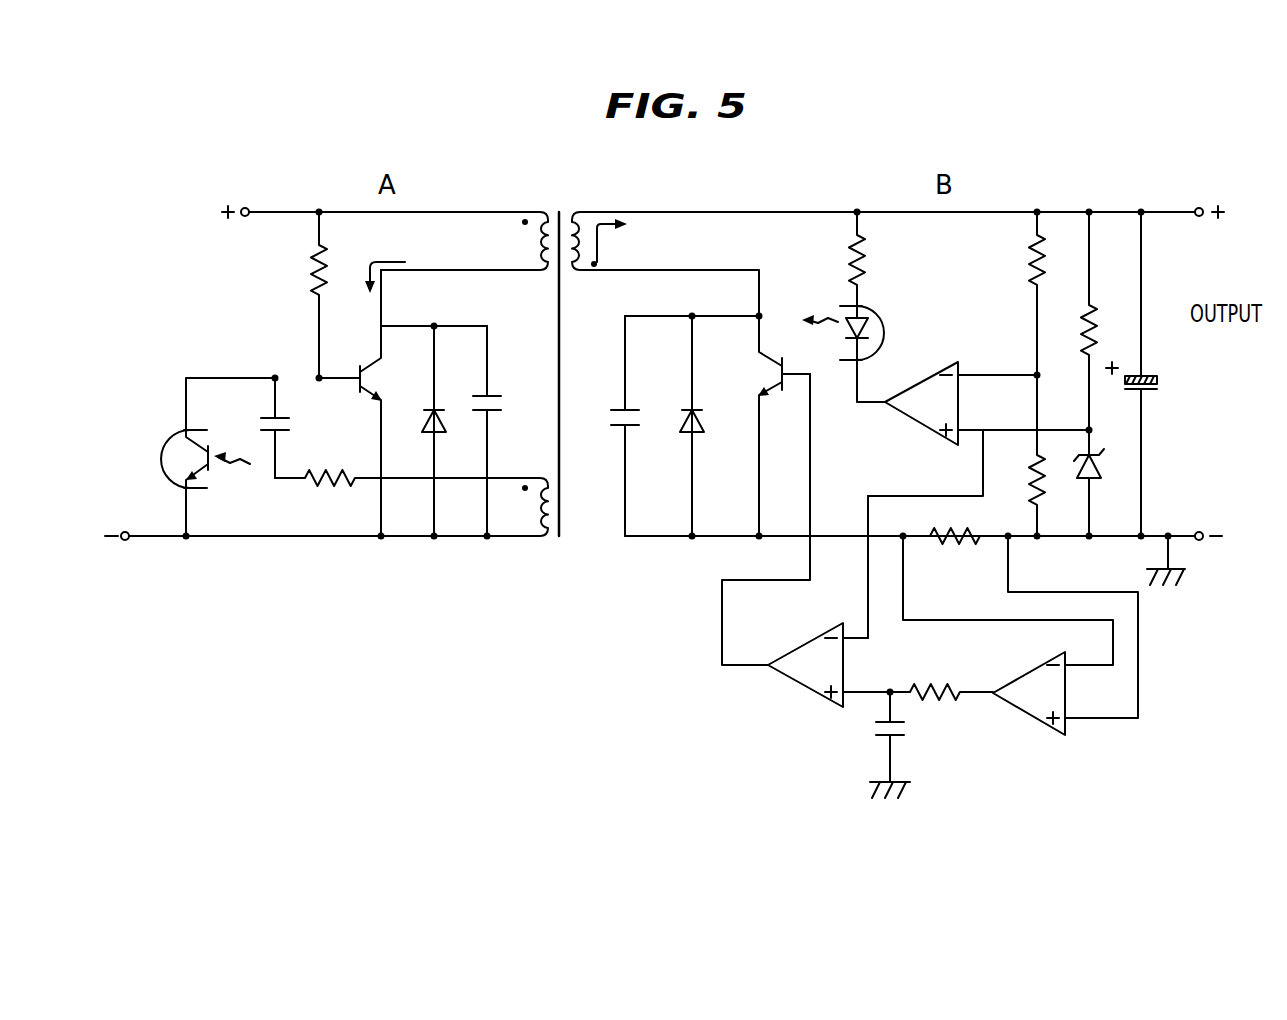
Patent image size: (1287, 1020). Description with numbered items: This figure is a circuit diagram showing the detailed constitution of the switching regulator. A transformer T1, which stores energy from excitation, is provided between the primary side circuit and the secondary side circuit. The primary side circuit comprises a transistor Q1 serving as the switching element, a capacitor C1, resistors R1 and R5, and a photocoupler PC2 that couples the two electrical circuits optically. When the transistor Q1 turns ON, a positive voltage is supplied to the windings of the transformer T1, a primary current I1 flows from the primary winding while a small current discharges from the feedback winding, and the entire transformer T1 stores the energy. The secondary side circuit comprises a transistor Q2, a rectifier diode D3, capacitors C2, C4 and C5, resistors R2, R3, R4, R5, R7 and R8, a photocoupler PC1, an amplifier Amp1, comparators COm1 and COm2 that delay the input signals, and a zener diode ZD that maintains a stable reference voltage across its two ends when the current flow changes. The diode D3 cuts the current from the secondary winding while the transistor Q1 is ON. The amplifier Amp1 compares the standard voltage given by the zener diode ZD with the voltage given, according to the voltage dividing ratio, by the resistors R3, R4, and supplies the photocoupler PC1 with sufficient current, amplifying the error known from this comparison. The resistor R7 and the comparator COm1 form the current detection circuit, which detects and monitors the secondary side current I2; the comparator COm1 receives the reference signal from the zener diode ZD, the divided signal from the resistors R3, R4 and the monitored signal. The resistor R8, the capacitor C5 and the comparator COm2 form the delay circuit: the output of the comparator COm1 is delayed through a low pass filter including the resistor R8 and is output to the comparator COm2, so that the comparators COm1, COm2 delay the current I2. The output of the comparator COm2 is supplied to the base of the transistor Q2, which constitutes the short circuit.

The resistor R5 is at (688, 320).
The resistor R1 is at (328, 496).
The resistor R2 is at (874, 258).
The resistor R3 is at (1054, 292).
The resistor R4 is at (1022, 457).
The resistor R7 is at (956, 558).
The resistor R8 is at (941, 673).
The capacitor C1 is at (294, 427).
The capacitor C2 is at (850, 374).
The capacitor C4 is at (608, 426).
The capacitor C5 is at (906, 744).
The rectifier diode D3 is at (581, 426).
The transistor Q1 is at (368, 405).
The transistor Q2 is at (766, 426).
The photocoupler PC1 is at (869, 350).
The photocoupler PC2 is at (205, 459).
The transformer T1 is at (570, 354).
The zener diode ZD is at (1108, 485).
The amplifier Amp1 is at (913, 405).
The comparator COm1 is at (1025, 703).
The comparator COm2 is at (797, 673).
The primary side current I1 is at (385, 259).
The secondary side current I2 is at (612, 241).